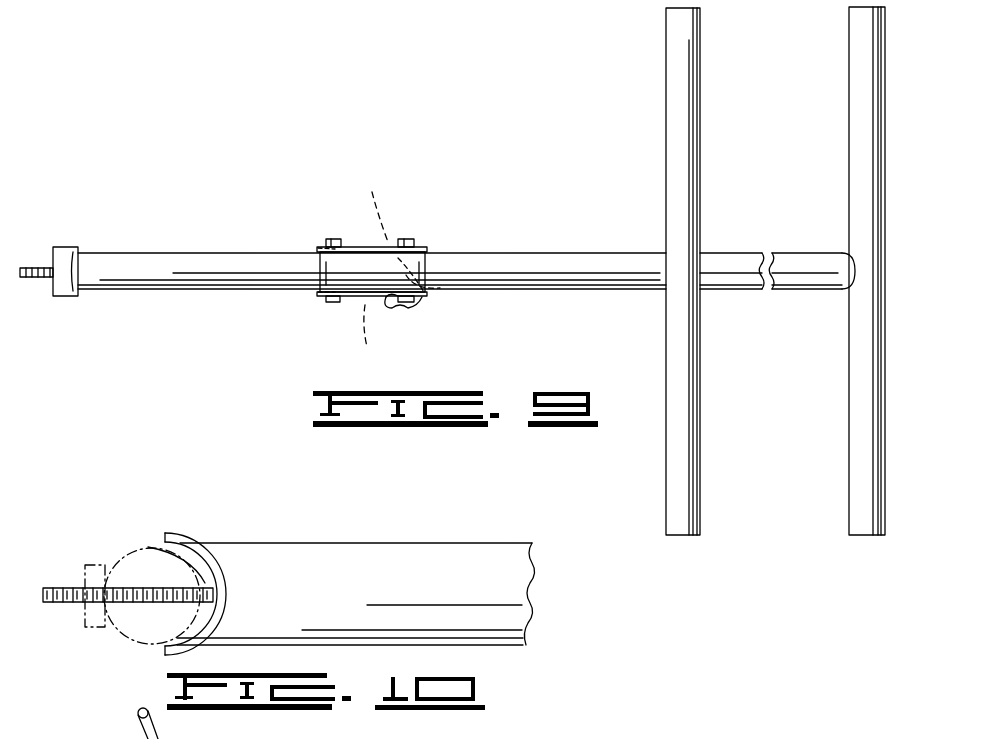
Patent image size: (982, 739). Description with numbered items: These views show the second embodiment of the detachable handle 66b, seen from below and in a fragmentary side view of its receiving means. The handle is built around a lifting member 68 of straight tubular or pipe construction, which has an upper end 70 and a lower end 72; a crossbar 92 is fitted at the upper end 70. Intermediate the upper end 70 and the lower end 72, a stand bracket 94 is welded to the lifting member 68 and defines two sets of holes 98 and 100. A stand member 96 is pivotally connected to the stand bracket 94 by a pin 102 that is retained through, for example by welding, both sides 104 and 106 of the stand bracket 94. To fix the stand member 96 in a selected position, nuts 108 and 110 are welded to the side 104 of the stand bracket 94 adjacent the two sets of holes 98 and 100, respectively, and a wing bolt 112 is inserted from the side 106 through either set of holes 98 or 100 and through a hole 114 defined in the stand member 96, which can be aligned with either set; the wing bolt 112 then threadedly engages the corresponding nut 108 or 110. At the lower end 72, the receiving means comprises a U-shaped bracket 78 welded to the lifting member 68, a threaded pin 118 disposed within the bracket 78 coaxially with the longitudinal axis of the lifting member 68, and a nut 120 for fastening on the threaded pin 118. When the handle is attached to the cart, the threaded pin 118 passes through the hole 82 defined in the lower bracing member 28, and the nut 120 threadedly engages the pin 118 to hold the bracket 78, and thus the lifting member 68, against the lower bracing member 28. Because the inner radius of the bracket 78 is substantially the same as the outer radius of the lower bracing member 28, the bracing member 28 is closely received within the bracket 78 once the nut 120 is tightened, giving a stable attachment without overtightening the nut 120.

In FIG. 10, the lower bracing member 28 is at (145, 645).
In FIG. 9, the detachable handle 66b is at (499, 176).
In FIG. 9, the lifting member 68 is at (767, 295).
In FIG. 10, the lifting member 68 is at (530, 592).
In FIG. 9, the upper end 70 is at (838, 283).
In FIG. 9, the lower end 72 is at (105, 262).
In FIG. 10, the lower end 72 is at (290, 565).
In FIG. 9, the U-shaped bracket 78 is at (60, 262).
In FIG. 10, the U-shaped bracket 78 is at (182, 540).
In FIG. 10, the hole 82 is at (120, 556).
In FIG. 9, the crossbar 92 is at (852, 0).
In FIG. 10, the crossbar 92 is at (138, 716).
In FIG. 9, the stand bracket 94 is at (428, 246).
In FIG. 9, the stand member 96 is at (673, 302).
In FIG. 9, the set of holes 98 is at (372, 192).
In FIG. 9, the set of holes 100 is at (314, 247).
In FIG. 9, the pin 102 is at (325, 295).
In FIG. 9, the side 104 is at (362, 248).
In FIG. 9, the side 106 is at (340, 298).
In FIG. 9, the nut 108 is at (403, 240).
In FIG. 9, the nut 110 is at (328, 240).
In FIG. 9, the wing bolt 112 is at (395, 310).
In FIG. 9, the hole 114 is at (428, 282).
In FIG. 9, the threaded pin 118 is at (36, 268).
In FIG. 10, the threaded pin 118 is at (75, 605).
In FIG. 10, the nut 120 is at (95, 630).